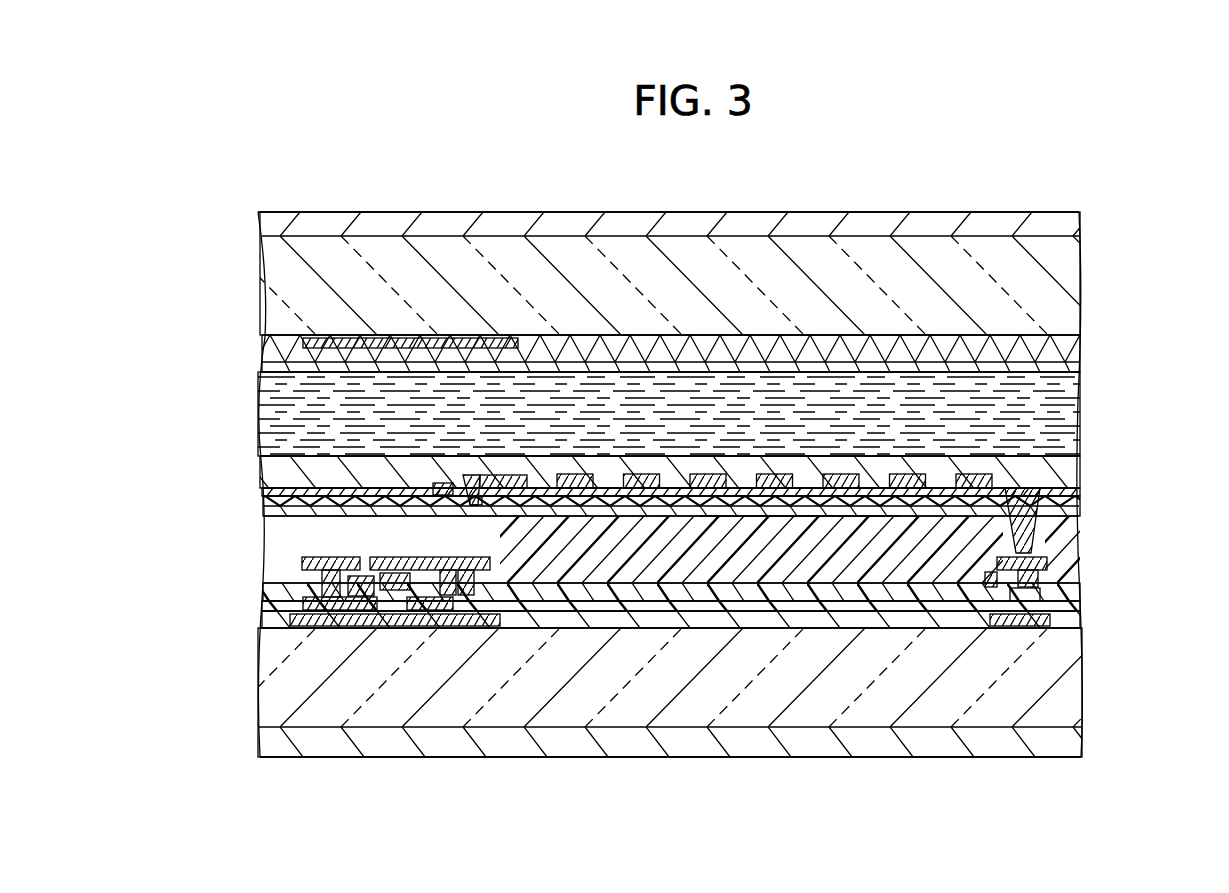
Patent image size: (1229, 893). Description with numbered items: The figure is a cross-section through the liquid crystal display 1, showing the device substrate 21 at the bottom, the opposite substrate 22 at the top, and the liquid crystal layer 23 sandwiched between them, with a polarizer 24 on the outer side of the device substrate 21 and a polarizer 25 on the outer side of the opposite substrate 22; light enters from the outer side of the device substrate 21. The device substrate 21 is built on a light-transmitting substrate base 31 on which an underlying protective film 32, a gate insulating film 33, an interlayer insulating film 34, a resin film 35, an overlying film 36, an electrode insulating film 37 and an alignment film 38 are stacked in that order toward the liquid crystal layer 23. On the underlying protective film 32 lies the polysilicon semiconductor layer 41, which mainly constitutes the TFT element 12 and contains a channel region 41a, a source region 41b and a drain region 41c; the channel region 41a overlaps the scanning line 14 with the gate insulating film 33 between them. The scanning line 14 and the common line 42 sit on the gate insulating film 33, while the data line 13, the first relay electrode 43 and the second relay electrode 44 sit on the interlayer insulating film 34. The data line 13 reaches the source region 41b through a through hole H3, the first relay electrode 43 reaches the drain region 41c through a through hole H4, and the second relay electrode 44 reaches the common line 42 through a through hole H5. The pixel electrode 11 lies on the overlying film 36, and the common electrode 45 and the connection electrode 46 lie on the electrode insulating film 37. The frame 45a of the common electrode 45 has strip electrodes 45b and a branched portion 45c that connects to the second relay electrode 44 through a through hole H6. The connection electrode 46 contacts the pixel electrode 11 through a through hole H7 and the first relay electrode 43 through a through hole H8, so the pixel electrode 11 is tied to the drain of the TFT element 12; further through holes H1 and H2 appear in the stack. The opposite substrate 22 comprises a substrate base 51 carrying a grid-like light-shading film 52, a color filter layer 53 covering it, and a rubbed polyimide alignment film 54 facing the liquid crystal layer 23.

The liquid crystal display 1 is at (1032, 168).
The pixel electrode 11 is at (822, 516).
The TFT element 12 is at (475, 616).
The data line 13 is at (266, 580).
The scanning line 14 is at (368, 576).
The device substrate 21 is at (246, 460).
The opposite substrate 22 is at (246, 372).
The liquid crystal layer 23 is at (246, 376).
The polarizer 24 is at (260, 740).
The polarizer 25 is at (258, 214).
The substrate base 31 is at (1075, 680).
The underlying protective film 32 is at (1070, 622).
The gate insulating film 33 is at (1070, 608).
The interlayer insulating film 34 is at (1070, 592).
The resin film 35 is at (1075, 540).
The overlying film 36 is at (1075, 510).
The electrode insulating film 37 is at (1075, 493).
The alignment film 38 is at (1070, 480).
The semiconductor layer 41 is at (386, 715).
The channel region 41a is at (398, 612).
The source region 41b is at (346, 612).
The drain region 41c is at (457, 612).
The common line 42 is at (1015, 628).
The first relay electrode 43 is at (492, 563).
The second relay electrode 44 is at (1050, 565).
The common electrode 45 is at (741, 432).
The frame 45a is at (577, 474).
The second pixel electrode portion 45b is at (612, 416).
The branched portion 45c is at (972, 474).
The connection electrode 46 is at (478, 475).
The substrate base 51 is at (1080, 258).
The light-shading film 52 is at (352, 338).
The color filter layer 53 is at (1080, 345).
The alignment film 54 is at (1080, 367).
The contact hole H1 is at (476, 570).
The contact hole H2 is at (1010, 548).
The through hole H3 is at (331, 570).
The through hole H4 is at (448, 570).
The through hole H5 is at (990, 572).
The through hole H6 is at (1025, 488).
The through hole H7 is at (478, 500).
The through hole H8 is at (450, 490).